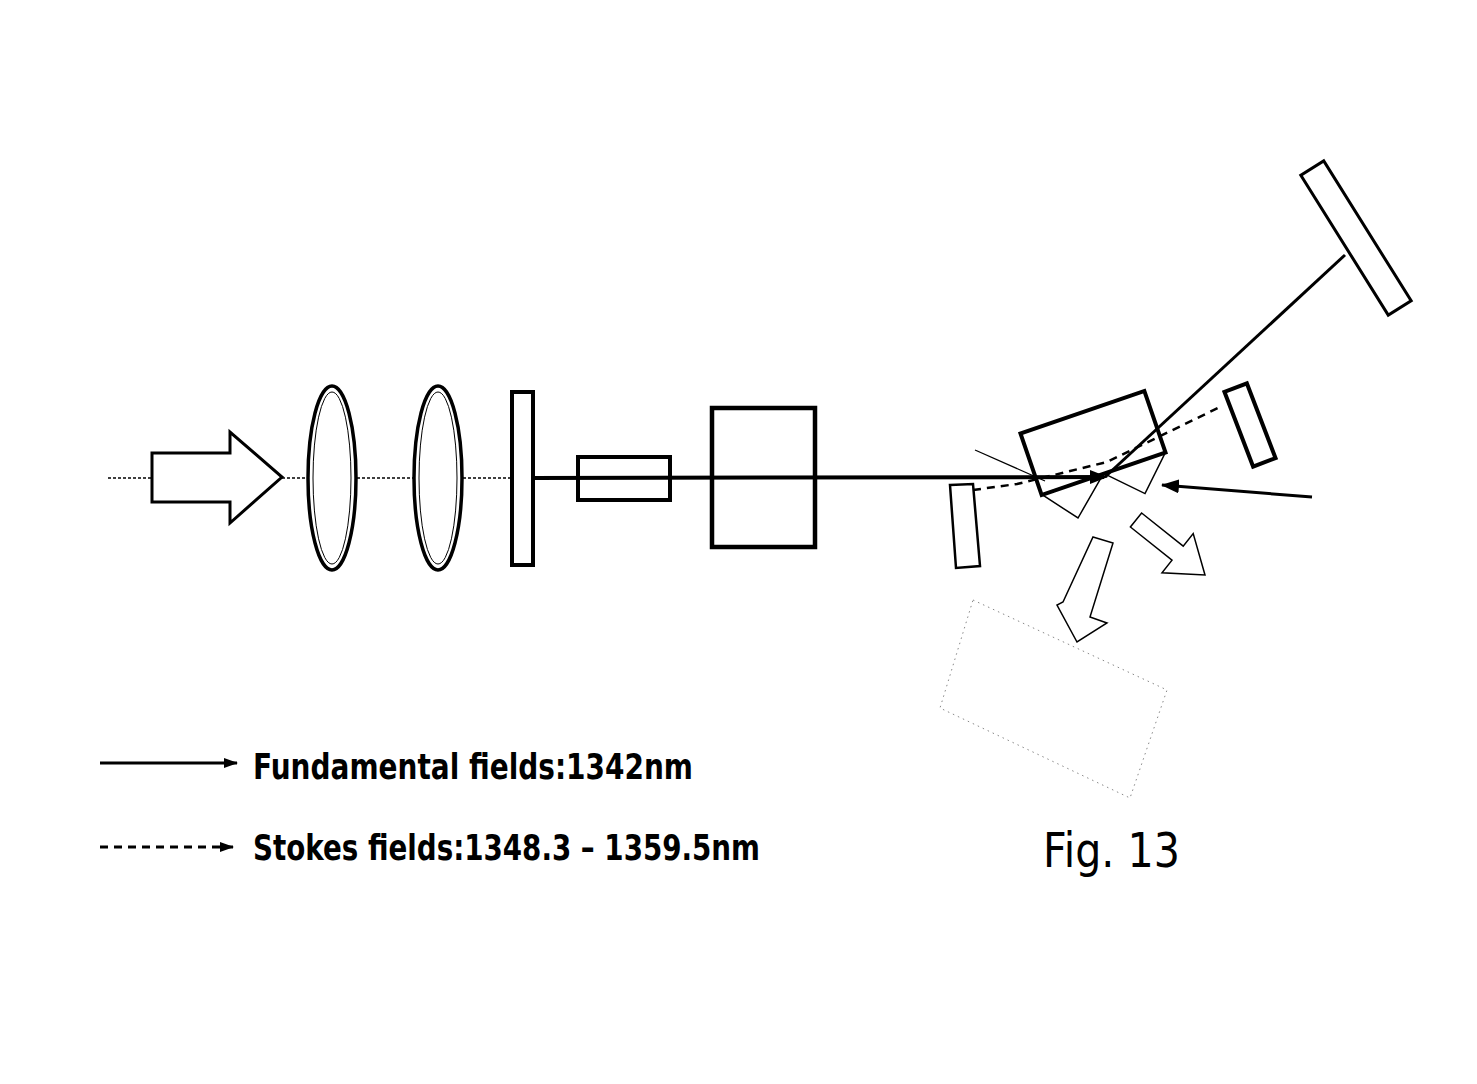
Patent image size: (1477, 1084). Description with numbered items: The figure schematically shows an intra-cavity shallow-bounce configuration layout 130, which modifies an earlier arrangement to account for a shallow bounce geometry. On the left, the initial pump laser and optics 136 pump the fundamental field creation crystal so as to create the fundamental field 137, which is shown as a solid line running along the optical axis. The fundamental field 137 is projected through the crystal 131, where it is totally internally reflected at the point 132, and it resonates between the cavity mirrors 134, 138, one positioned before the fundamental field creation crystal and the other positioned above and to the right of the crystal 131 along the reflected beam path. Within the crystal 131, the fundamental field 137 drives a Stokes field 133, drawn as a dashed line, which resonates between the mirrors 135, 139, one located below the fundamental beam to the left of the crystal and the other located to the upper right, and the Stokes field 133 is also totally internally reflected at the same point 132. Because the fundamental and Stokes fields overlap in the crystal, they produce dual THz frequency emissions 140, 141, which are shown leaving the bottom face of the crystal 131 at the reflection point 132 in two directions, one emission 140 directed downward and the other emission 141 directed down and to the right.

The THz laser system 130 is at (623, 180).
The crystal 131 is at (1018, 433).
The total internal reflection point 132 is at (1108, 493).
The Stokes field 133 is at (1182, 442).
The cavity mirror 134 is at (1384, 323).
The mirror 135 is at (1284, 447).
The pump laser and optics 136 is at (280, 282).
The fundamental field 137 is at (849, 486).
The cavity mirror 138 is at (505, 395).
The mirror 139 is at (950, 577).
The THz frequency emission 140 is at (1098, 637).
The THz frequency emission 141 is at (1201, 548).